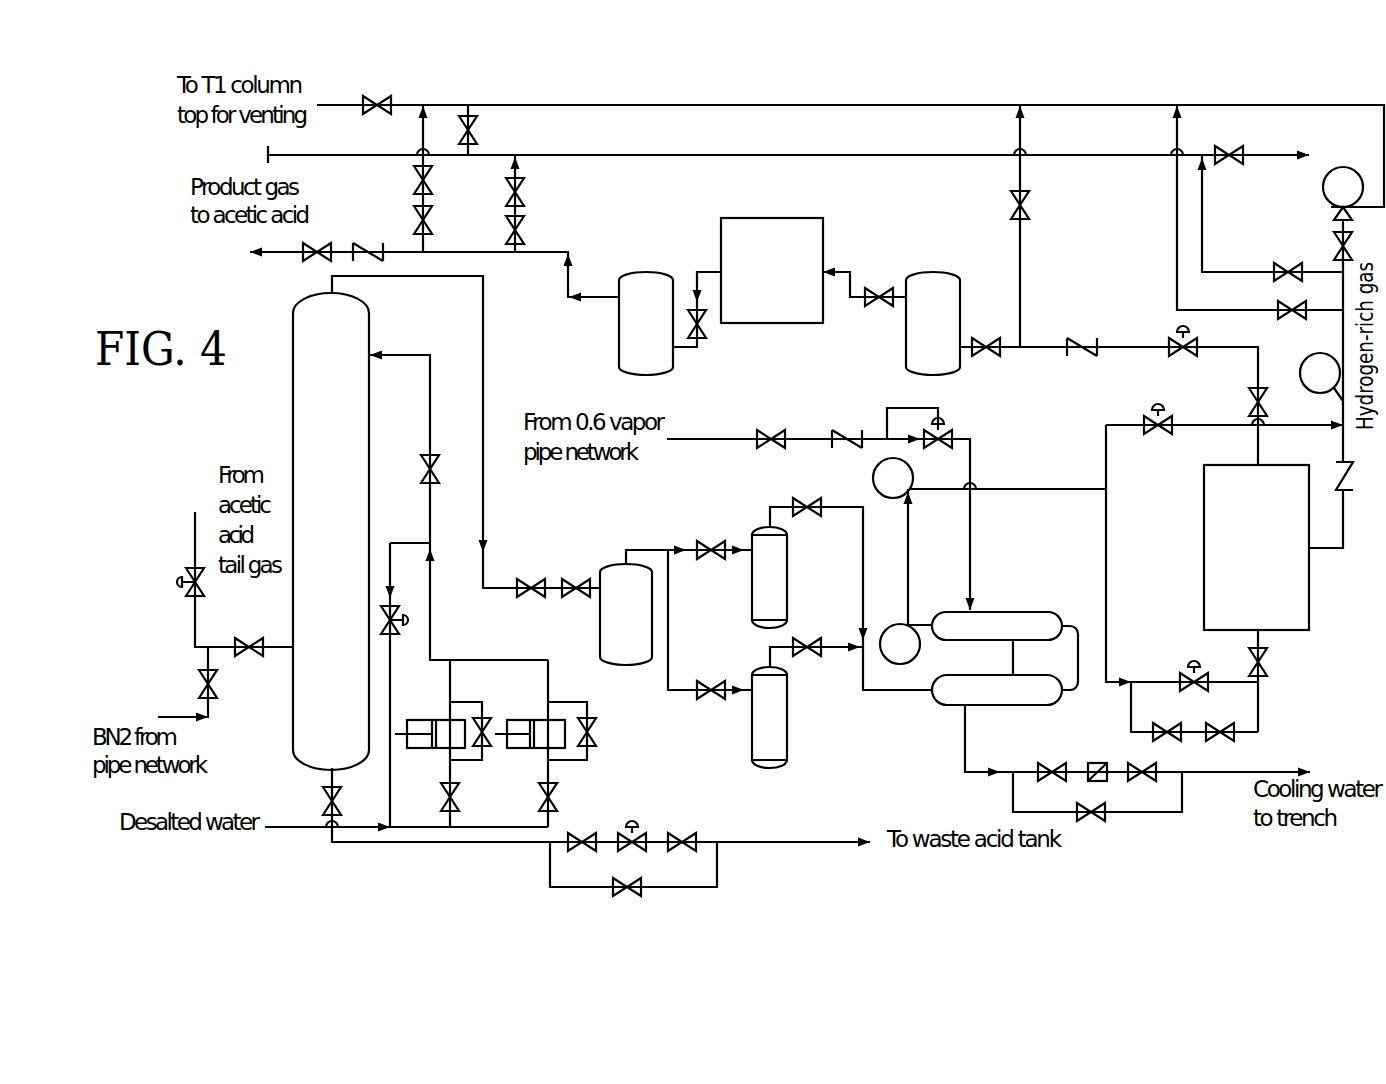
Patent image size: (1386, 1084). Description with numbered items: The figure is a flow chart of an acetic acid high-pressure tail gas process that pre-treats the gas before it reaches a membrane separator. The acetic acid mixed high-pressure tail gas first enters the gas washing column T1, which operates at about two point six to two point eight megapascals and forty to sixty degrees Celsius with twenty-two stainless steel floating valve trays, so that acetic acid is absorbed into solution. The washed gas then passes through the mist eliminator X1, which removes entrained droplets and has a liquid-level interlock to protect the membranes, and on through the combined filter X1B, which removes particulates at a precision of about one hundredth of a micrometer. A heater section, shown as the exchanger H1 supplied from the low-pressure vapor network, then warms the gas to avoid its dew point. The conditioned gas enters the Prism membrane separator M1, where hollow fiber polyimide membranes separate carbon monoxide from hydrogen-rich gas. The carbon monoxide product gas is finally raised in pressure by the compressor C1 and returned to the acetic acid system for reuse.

The gas washing column T1 is at (331, 531).
The compressor C1 is at (772, 270).
The mist eliminator X1 is at (626, 614).
The combined filter X1B is at (801, 647).
The Prism membrane separator M1 is at (1256, 547).
The heat exchanger H1 is at (1005, 676).